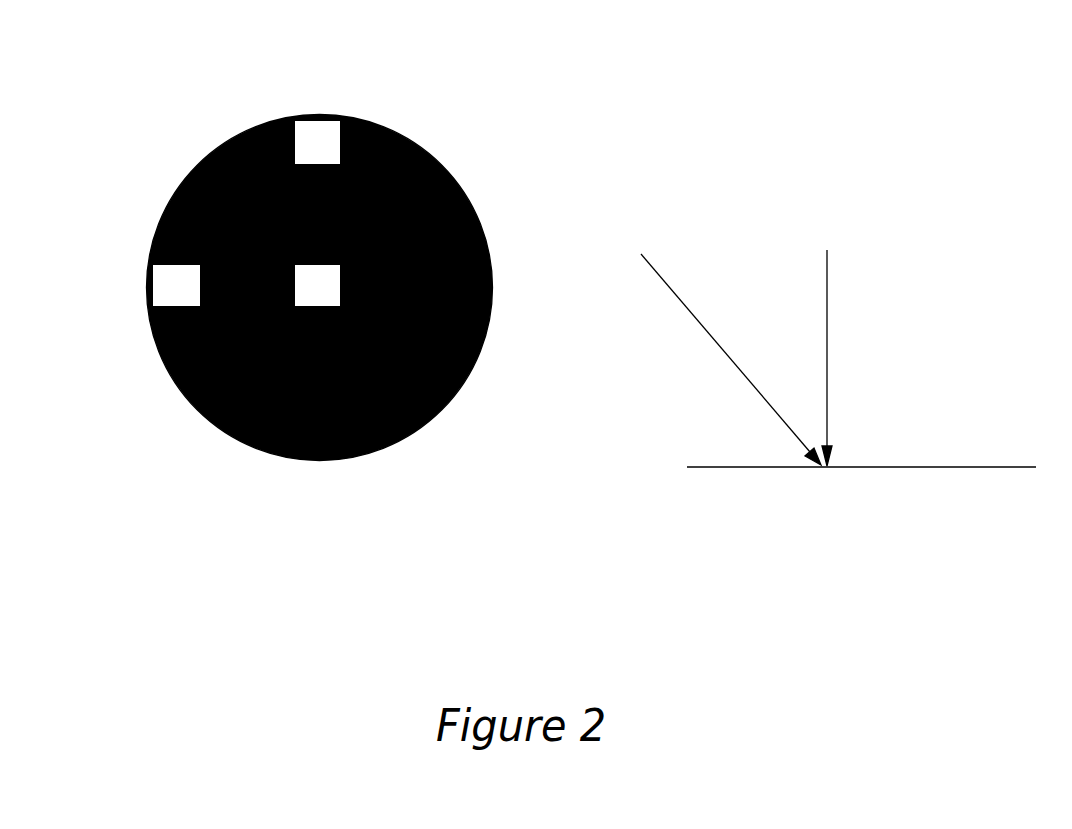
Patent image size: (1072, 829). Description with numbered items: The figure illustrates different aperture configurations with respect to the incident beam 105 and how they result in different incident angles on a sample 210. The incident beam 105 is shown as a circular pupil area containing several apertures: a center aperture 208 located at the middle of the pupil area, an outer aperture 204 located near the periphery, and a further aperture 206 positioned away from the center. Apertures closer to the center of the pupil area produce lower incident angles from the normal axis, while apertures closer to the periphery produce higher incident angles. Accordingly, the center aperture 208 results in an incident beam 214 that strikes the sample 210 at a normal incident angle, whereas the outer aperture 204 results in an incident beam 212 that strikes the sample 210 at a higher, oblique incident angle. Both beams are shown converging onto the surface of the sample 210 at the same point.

The incident beam 105 is at (337, 453).
The outer aperture 204 is at (142, 253).
The aperture 206 is at (317, 108).
The center aperture 208 is at (340, 263).
The sample 210 is at (950, 461).
The oblique incident beam 212 is at (684, 308).
The normal incident beam 214 is at (819, 287).